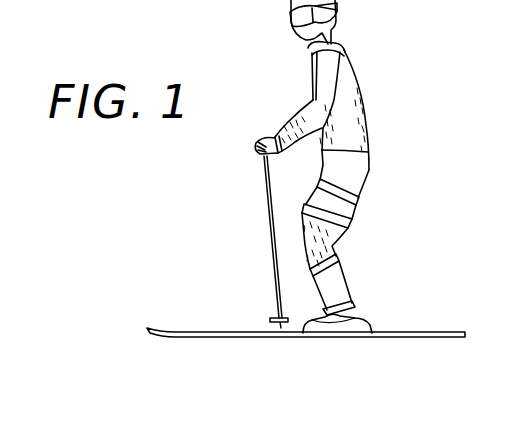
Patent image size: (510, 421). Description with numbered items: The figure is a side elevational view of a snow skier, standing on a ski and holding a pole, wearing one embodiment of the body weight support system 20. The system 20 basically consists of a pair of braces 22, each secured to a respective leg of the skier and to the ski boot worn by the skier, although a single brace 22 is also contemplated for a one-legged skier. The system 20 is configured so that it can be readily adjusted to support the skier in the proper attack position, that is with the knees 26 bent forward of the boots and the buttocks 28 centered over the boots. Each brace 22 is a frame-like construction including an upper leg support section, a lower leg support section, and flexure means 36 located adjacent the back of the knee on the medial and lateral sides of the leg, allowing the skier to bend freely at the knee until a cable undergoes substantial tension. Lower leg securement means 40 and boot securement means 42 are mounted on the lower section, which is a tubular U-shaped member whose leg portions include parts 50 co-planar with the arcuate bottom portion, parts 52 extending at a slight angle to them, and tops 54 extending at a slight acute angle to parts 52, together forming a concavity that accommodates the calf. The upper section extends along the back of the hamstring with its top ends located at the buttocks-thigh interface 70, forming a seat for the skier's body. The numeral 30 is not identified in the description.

The body weight support system 20 is at (337, 236).
The brace 22 is at (313, 286).
The knees 26 is at (303, 229).
The buttocks 28 is at (365, 164).
The ski 30 is at (227, 338).
The flexure means 36 is at (352, 222).
The lower leg securement means 40 is at (309, 258).
The boot securement means 42 is at (343, 318).
The leg portion parts contiguous with bottom portion 50 is at (352, 294).
The leg portion parts contiguous with portions 50 52 is at (341, 274).
The top of leg portions 54 is at (337, 247).
The buttocks-thigh interface 70 is at (360, 196).